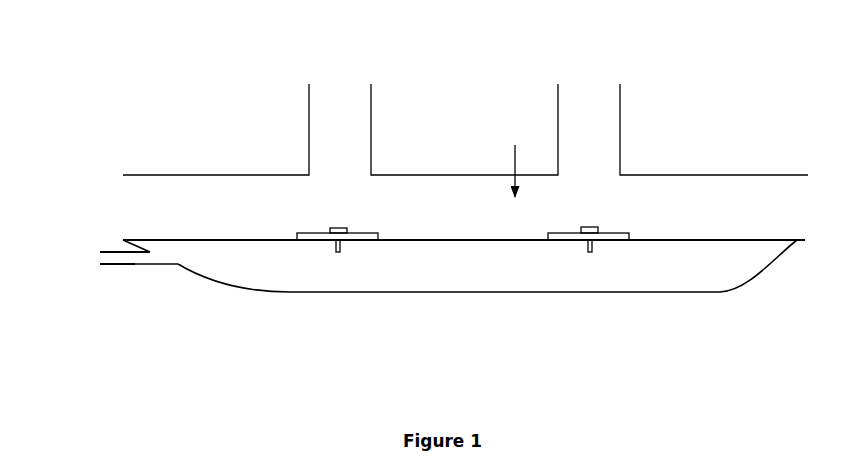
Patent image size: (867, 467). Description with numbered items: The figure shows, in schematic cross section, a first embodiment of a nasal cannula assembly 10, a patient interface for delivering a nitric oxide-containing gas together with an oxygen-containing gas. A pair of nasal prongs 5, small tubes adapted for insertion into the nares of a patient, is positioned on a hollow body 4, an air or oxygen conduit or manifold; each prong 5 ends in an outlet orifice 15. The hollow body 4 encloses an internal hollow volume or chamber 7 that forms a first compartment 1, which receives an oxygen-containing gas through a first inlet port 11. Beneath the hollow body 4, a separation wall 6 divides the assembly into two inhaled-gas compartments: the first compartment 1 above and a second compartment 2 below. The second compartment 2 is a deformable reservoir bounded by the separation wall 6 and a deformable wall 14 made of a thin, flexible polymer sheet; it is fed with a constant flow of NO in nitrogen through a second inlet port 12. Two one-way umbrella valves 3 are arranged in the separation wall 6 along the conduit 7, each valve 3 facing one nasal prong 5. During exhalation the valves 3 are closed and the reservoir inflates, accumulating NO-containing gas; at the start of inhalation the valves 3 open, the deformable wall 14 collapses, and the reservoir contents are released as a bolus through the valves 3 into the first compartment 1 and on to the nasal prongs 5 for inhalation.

The first compartment 1 is at (457, 215).
The second compartment 2 is at (479, 275).
The one-way valve 3 is at (345, 250).
The hollow body 4 is at (245, 163).
The nasal prong 5 is at (397, 112).
The separation wall 6 is at (733, 245).
The internal hollow volume or chamber 7 is at (515, 147).
The nasal cannula assembly 10 is at (275, 329).
The first inlet port 11 is at (160, 213).
The second inlet port 12 is at (158, 266).
The deformable wall 14 is at (430, 300).
The outlet orifice 15 is at (361, 90).